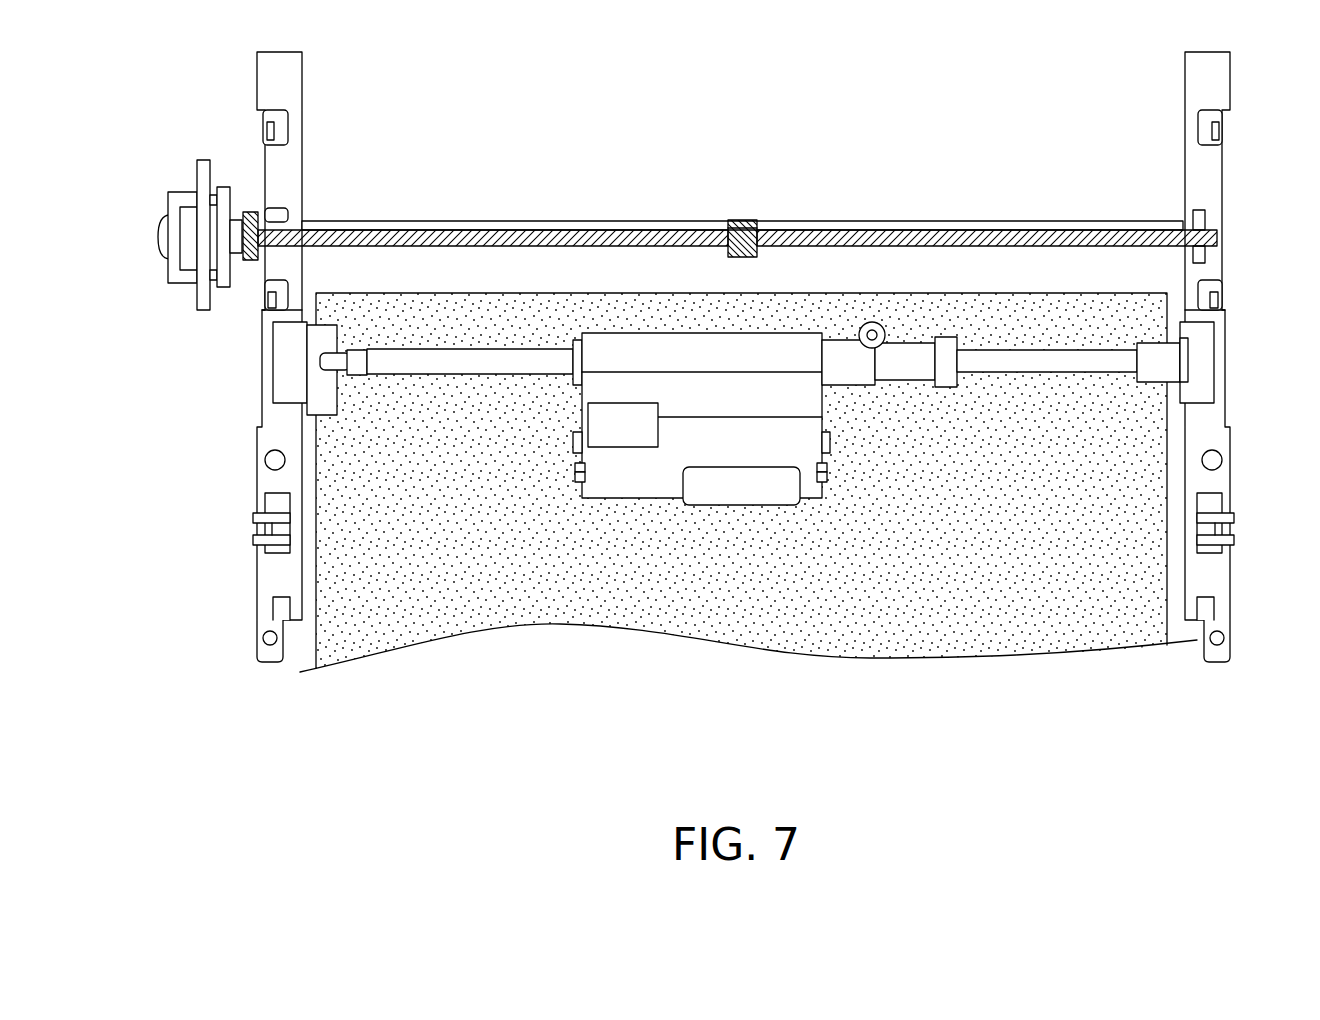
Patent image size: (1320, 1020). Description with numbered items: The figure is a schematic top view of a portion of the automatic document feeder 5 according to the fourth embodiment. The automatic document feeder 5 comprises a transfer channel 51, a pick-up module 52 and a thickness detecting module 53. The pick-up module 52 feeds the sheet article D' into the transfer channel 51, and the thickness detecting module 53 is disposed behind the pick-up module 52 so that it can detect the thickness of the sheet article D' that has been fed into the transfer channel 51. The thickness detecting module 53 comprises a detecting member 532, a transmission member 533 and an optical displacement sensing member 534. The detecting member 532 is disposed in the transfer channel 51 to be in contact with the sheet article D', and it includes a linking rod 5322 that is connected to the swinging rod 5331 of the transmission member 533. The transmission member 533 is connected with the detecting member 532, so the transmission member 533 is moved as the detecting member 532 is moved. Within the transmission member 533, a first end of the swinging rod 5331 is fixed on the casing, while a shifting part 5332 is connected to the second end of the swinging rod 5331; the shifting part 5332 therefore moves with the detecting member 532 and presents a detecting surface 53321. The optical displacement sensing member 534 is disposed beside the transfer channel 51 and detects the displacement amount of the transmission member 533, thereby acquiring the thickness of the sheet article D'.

The automatic document feeder 5 is at (878, 86).
The transfer channel 51 is at (1158, 267).
The pick-up module 52 is at (652, 480).
The thickness detecting module 53 is at (737, 191).
The detecting member 532 is at (747, 218).
The linking rod 5322 is at (745, 228).
The transmission member 533 is at (858, 232).
The swinging rod 5331 is at (327, 236).
The shifting part 5332 is at (243, 210).
The detecting surface 53321 is at (240, 288).
The optical displacement sensing member 534 is at (200, 213).
The sheet article D' is at (748, 523).